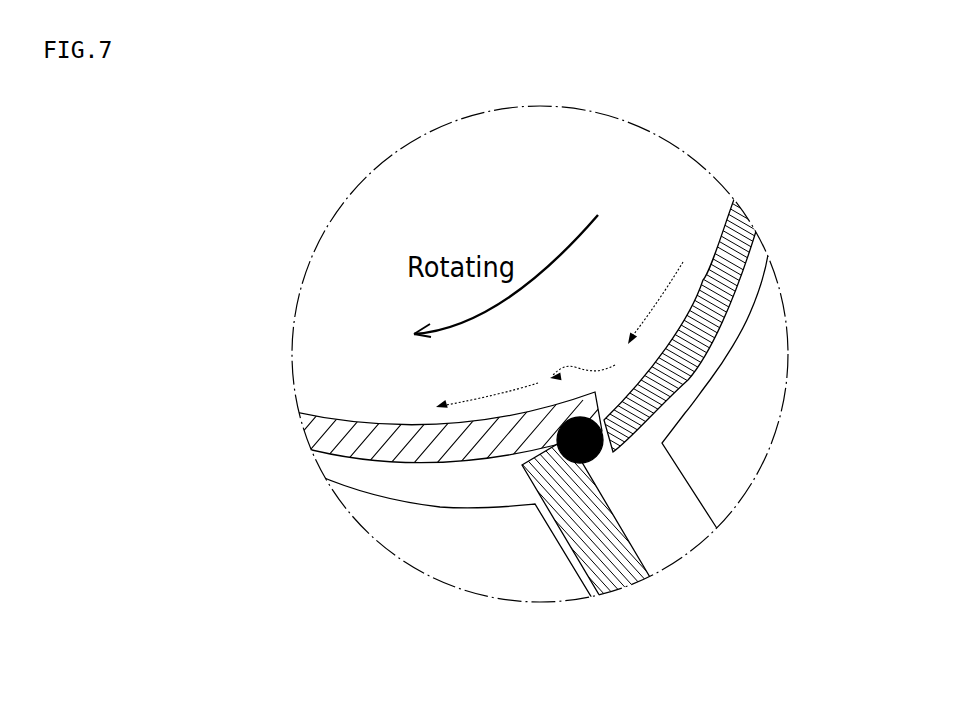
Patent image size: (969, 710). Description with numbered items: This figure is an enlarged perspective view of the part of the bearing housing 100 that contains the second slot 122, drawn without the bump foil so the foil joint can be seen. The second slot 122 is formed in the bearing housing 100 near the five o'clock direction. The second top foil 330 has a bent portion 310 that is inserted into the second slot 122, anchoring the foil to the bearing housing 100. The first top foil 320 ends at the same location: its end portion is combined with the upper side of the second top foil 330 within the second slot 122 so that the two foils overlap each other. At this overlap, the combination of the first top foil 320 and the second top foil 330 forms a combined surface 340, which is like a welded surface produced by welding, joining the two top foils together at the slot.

The bearing housing 100 is at (462, 562).
The second slot 122 is at (673, 532).
The bent portion 310 is at (615, 592).
The first top foil 320 is at (321, 431).
The second top foil 330 is at (745, 220).
The combined surface 340 is at (593, 458).